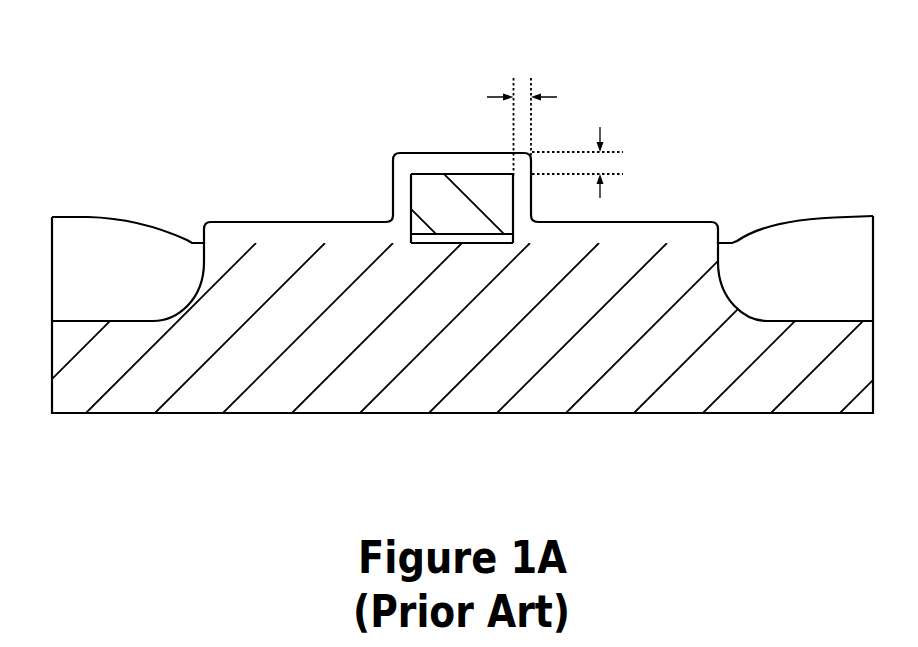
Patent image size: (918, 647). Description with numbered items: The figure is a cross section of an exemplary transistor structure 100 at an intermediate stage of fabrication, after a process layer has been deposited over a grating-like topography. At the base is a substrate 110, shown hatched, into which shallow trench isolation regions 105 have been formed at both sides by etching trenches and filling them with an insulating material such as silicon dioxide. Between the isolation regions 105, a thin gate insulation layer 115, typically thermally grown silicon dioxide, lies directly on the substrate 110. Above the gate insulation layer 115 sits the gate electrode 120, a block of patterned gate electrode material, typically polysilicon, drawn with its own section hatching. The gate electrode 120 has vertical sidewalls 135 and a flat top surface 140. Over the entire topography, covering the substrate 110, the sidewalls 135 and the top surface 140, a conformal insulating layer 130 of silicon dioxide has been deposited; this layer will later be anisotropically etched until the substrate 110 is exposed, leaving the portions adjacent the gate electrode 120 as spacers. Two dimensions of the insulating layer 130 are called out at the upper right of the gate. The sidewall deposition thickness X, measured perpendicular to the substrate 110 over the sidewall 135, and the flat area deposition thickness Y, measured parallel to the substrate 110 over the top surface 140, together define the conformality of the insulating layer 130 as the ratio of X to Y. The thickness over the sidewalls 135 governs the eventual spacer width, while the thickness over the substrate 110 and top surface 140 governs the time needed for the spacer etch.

The transistor structure 100 is at (85, 62).
The shallow trench isolation regions 105 is at (83, 302).
The substrate 110 is at (497, 380).
The gate insulation layer 115 is at (408, 238).
The gate electrode 120 is at (427, 207).
The insulating layer 130 is at (222, 235).
The sidewalls 135 is at (412, 182).
The top surface 140 is at (487, 173).
The sidewall deposition thickness X is at (547, 93).
The flat area deposition thickness Y is at (603, 135).